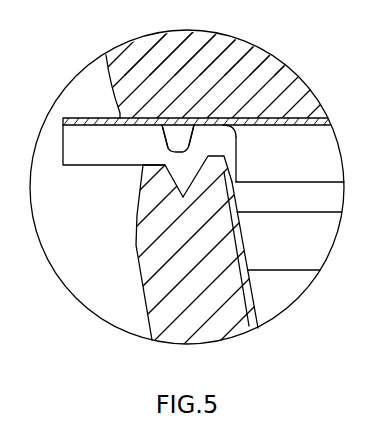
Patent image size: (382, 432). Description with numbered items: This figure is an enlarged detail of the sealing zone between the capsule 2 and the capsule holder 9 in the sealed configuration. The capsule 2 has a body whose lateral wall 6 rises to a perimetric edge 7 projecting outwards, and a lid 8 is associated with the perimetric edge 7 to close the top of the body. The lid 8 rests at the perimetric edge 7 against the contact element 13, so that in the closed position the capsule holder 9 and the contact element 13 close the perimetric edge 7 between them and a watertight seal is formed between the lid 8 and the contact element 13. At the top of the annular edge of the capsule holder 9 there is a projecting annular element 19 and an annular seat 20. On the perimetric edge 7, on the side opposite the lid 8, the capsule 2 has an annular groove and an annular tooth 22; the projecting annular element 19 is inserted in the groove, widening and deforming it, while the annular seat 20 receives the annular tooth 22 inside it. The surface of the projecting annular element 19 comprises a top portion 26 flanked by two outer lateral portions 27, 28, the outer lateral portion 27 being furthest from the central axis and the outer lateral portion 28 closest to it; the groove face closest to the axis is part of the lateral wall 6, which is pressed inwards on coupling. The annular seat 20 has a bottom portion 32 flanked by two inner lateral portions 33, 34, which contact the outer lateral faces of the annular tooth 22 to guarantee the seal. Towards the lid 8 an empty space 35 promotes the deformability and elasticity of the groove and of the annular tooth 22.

The capsule 2 is at (309, 241).
The lateral wall 6 is at (237, 182).
The perimetric edge 7 is at (73, 157).
The lid 8 is at (314, 127).
The capsule holder 9 is at (175, 275).
The contact element 13 is at (276, 75).
The projecting annular element 19 is at (236, 183).
The annular seat 20 is at (180, 186).
The annular tooth 22 is at (183, 191).
The top portion 26 is at (222, 164).
The outer lateral portion 27 is at (192, 170).
The outer lateral portion 28 is at (232, 182).
The bottom portion 32 is at (210, 185).
The inner lateral portion 33 is at (171, 173).
The inner lateral portion 34 is at (187, 177).
The empty space 35 is at (182, 135).